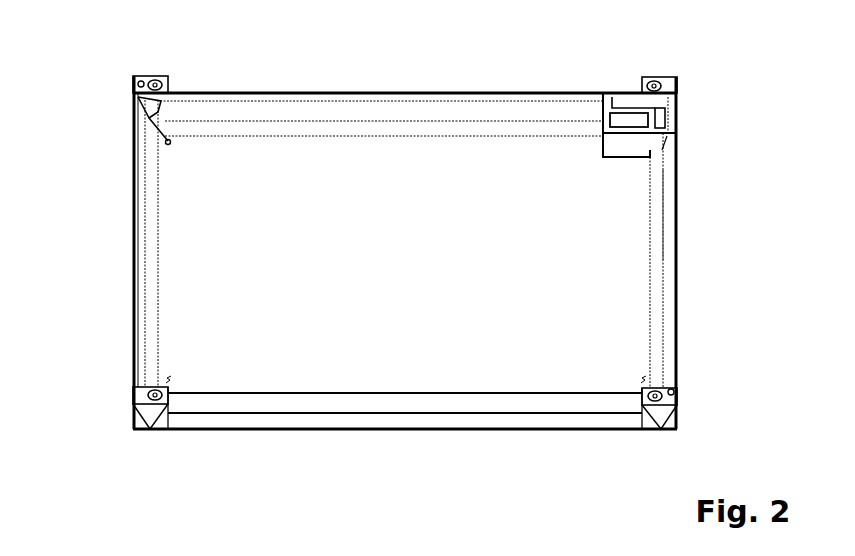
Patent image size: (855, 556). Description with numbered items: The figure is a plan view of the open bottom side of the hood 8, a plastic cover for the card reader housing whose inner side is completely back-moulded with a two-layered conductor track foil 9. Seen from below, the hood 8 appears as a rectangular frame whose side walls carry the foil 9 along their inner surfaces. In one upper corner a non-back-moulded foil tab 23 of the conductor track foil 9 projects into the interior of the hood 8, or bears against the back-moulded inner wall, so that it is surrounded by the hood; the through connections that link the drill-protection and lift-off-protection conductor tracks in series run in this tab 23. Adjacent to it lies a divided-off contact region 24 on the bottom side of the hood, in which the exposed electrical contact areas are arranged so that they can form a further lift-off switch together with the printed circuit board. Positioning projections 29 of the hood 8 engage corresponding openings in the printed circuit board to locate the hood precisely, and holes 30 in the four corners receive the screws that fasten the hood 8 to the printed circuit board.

The hood 8 is at (126, 66).
The conductor track foil 9 is at (573, 252).
The foil tab 23 is at (666, 108).
The contact region 24 is at (628, 118).
The positioning projections 29 is at (137, 83).
The holes 30 is at (155, 84).